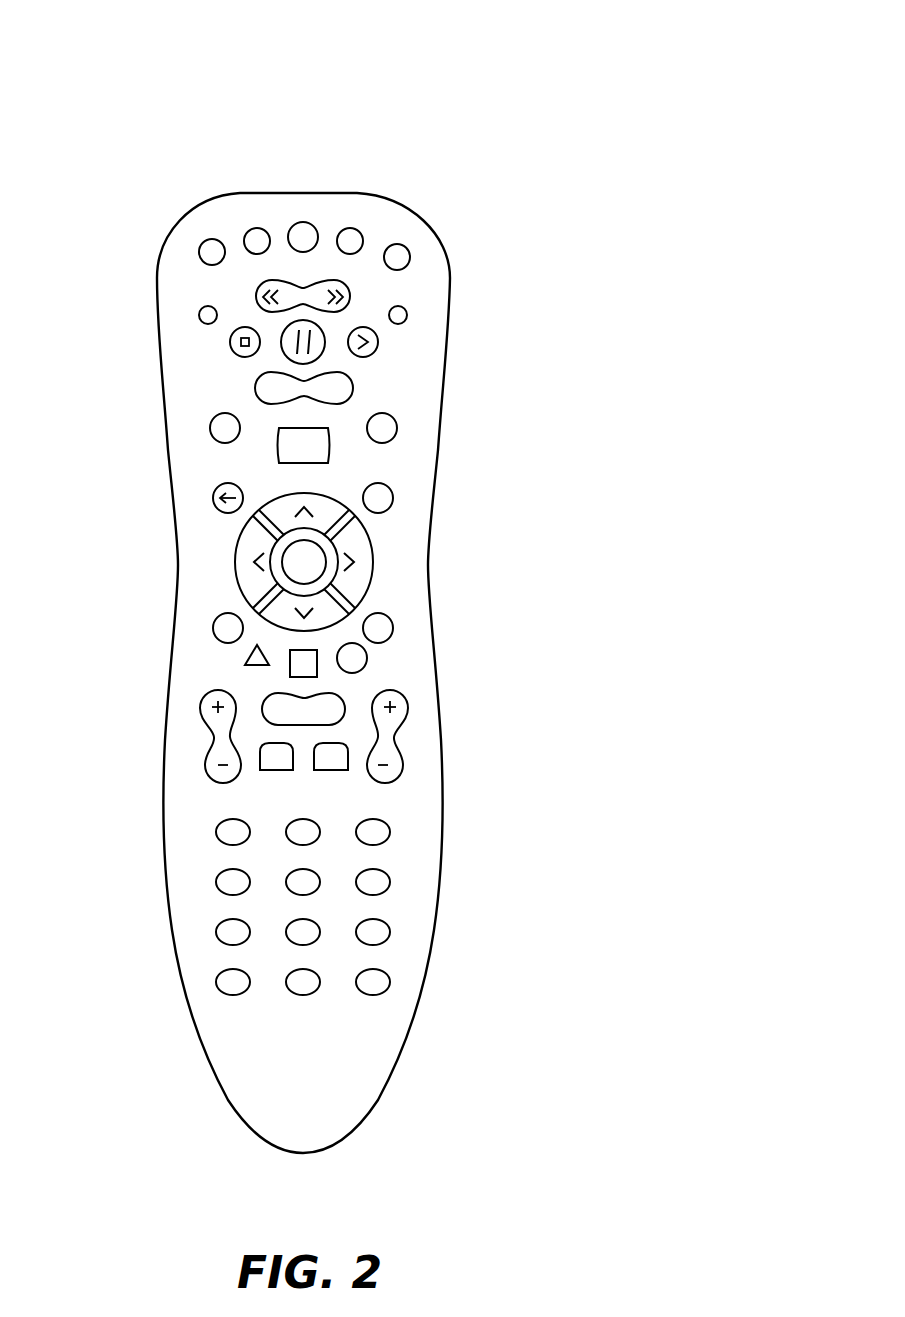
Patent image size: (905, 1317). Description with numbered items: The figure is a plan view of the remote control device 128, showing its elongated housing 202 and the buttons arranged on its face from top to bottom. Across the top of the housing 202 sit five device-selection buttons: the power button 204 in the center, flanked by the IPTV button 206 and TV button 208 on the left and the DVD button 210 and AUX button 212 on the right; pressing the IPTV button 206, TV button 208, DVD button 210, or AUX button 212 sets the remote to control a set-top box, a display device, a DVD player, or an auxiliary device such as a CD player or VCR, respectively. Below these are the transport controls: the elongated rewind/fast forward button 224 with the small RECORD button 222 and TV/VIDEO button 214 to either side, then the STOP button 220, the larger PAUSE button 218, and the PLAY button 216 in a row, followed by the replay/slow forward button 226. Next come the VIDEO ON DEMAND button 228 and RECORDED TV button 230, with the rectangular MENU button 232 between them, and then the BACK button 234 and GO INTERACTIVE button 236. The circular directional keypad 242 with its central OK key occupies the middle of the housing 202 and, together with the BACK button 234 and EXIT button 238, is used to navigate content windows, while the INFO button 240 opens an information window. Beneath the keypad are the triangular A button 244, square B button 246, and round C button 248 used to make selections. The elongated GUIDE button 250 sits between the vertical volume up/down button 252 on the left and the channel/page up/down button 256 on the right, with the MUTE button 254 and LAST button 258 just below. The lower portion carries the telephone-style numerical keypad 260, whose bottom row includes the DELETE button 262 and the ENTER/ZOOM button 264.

The remote control device 128 is at (597, 114).
The housing 202 is at (373, 673).
The power button 204 is at (225, 184).
The IPTV button 206 is at (131, 227).
The TV button 208 is at (168, 198).
The DVD button 210 is at (444, 199).
The AUX button 212 is at (482, 230).
The TV/VIDEO button 214 is at (483, 298).
The PLAY button 216 is at (457, 339).
The PAUSE button 218 is at (429, 366).
The STOP button 220 is at (154, 344).
The RECORD button 222 is at (128, 307).
The rewind/fast forward button 224 is at (195, 272).
The replay/slow forward button 226 is at (210, 394).
The VIDEO ON DEMAND button 228 is at (149, 436).
The RECORDED TV button 230 is at (464, 436).
The MENU button 232 is at (194, 463).
The BACK button 234 is at (155, 509).
The GO INTERACTIVE button 236 is at (457, 509).
The EXIT button 238 is at (150, 632).
The INFO button 240 is at (462, 635).
The directional keypad 242 is at (225, 562).
The triangular A button 244 is at (173, 664).
The square B button 246 is at (178, 686).
The round C button 248 is at (444, 673).
The GUIDE button 250 is at (206, 740).
The volume up/down button 252 is at (149, 736).
The MUTE button 254 is at (175, 797).
The channel/page up/down button 256 is at (464, 736).
The LAST button 258 is at (424, 779).
The numerical keypad 260 is at (388, 813).
The DELETE button 262 is at (158, 995).
The ENTER/ZOOM button 264 is at (433, 1031).